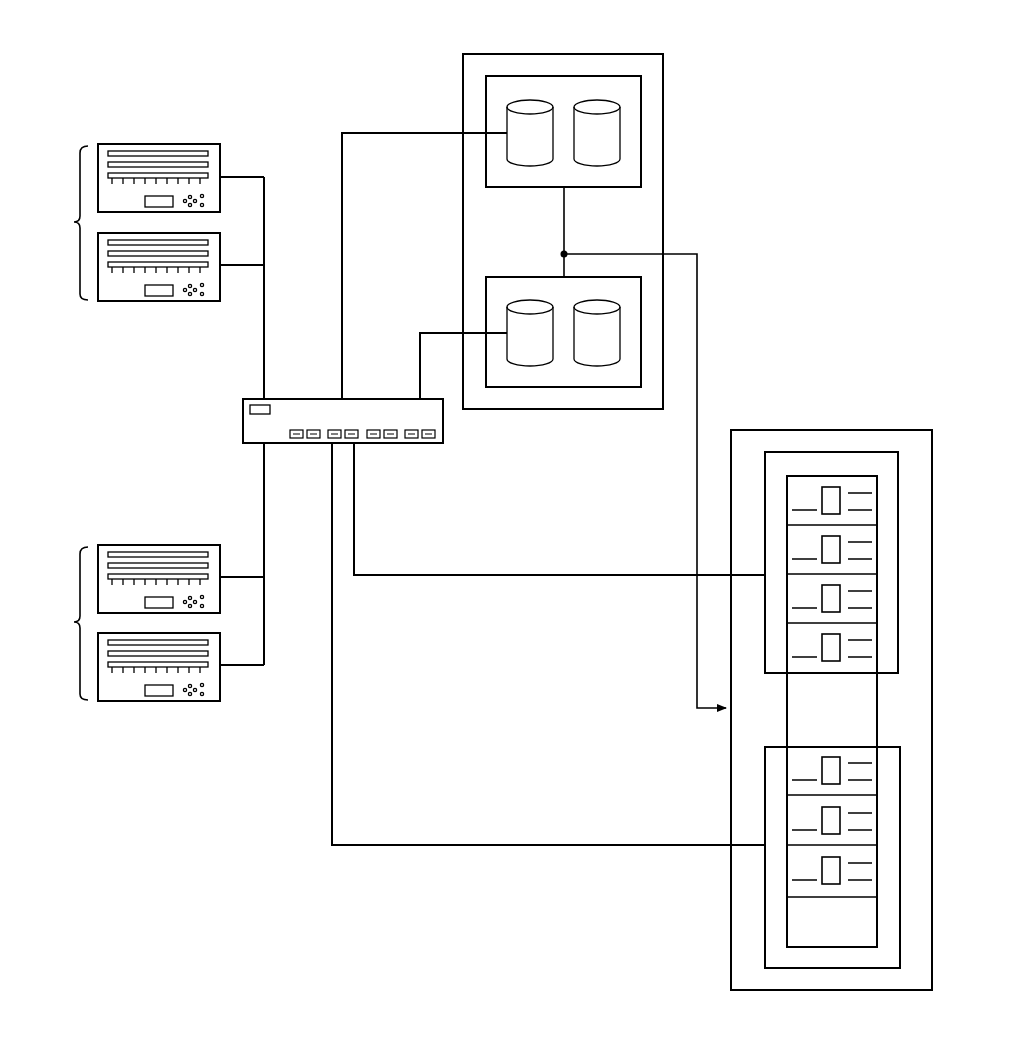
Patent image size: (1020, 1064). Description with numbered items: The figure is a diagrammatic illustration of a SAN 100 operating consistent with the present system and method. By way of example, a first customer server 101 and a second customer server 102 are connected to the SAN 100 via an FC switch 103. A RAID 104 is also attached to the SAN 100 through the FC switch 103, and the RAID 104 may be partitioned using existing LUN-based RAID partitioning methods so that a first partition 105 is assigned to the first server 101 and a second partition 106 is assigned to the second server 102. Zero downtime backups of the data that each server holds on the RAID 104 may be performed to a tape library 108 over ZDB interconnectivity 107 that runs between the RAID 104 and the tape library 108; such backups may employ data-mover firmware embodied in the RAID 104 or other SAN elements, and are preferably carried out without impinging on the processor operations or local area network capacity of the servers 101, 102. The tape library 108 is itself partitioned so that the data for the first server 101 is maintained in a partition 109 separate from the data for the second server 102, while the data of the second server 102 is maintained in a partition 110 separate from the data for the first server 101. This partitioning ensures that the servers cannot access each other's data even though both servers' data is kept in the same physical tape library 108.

The SAN 100 is at (286, 74).
The first customer server 101 is at (148, 222).
The second customer server 102 is at (148, 623).
The FC switch 103 is at (412, 448).
The RAID 104 is at (664, 147).
The first partition 105 is at (597, 188).
The second partition 106 is at (531, 276).
The ZDB interconnectivity 107 is at (697, 656).
The tape library 108 is at (890, 430).
The partition 109 is at (775, 746).
The partition 110 is at (885, 673).